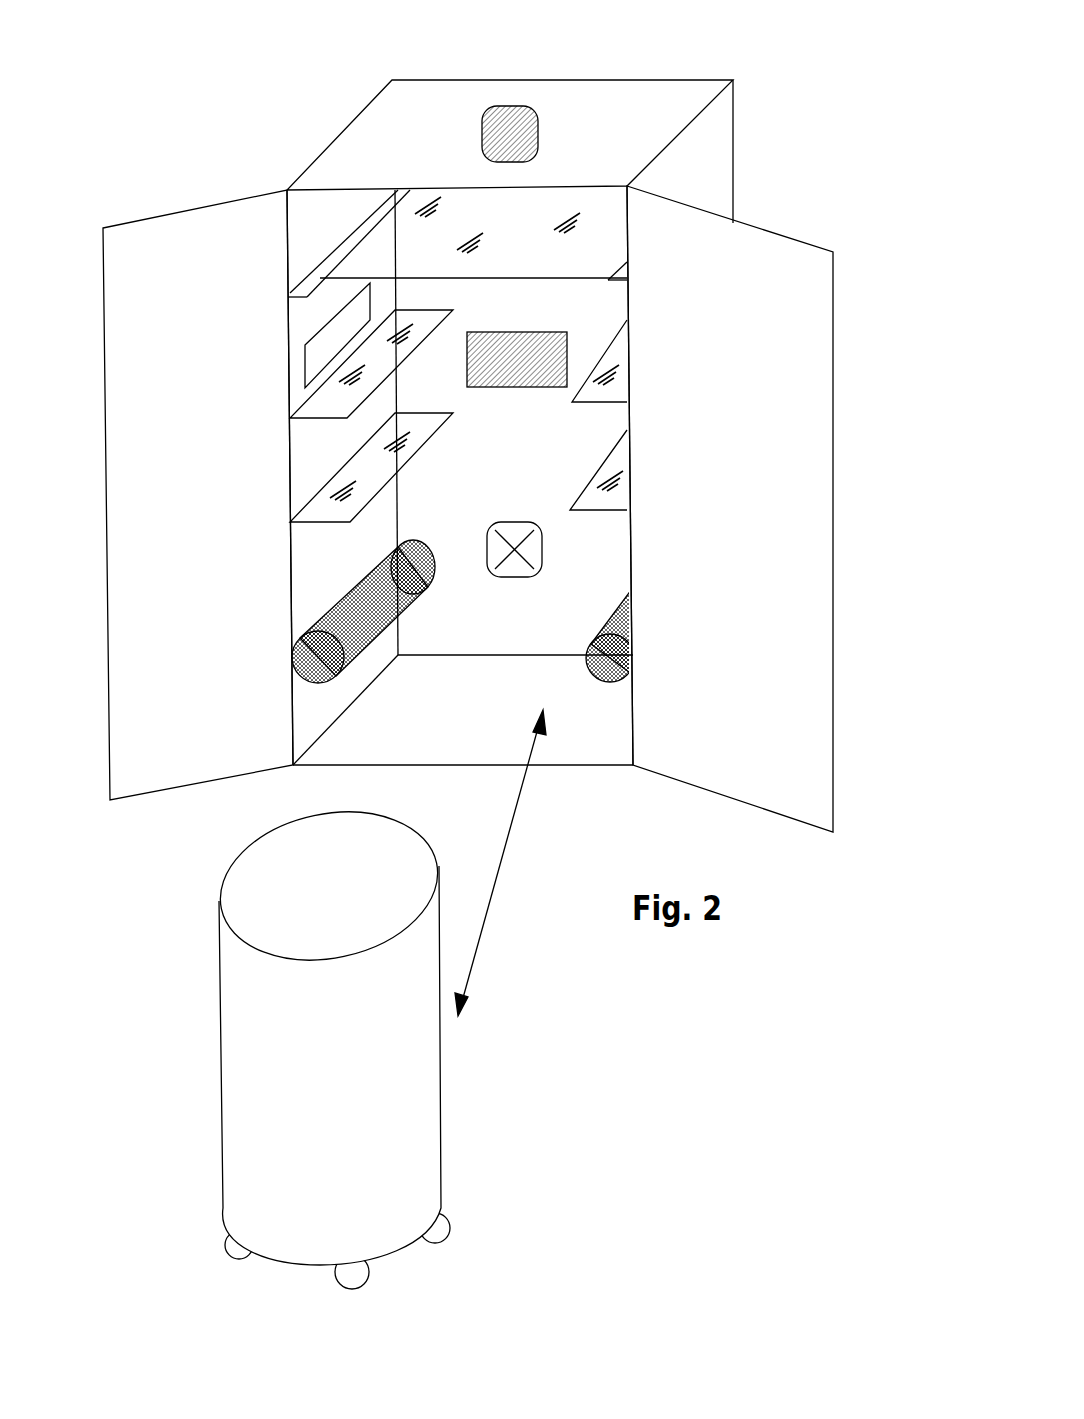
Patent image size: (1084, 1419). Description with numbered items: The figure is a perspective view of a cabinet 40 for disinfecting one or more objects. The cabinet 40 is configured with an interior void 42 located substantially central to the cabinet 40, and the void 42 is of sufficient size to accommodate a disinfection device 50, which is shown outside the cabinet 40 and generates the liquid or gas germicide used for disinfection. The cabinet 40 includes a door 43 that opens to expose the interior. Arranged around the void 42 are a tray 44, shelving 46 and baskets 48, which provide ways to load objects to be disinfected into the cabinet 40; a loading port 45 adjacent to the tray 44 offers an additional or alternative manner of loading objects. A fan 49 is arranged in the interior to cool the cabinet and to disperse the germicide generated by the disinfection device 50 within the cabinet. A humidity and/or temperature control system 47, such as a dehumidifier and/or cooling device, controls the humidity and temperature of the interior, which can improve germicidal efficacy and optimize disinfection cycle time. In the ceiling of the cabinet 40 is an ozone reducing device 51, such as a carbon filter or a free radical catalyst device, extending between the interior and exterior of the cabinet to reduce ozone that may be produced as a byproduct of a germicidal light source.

The cabinet 40 is at (722, 55).
The interior void 42 is at (527, 450).
The door 43 is at (145, 413).
The tray 44 is at (507, 252).
The loading port 45 is at (342, 335).
The shelving 46 is at (377, 350).
The humidity and/or temperature control system 47 is at (515, 358).
The baskets 48 is at (400, 534).
The fan 49 is at (542, 550).
The disinfection device 50 is at (316, 1046).
The ozone reducing device 51 is at (510, 135).